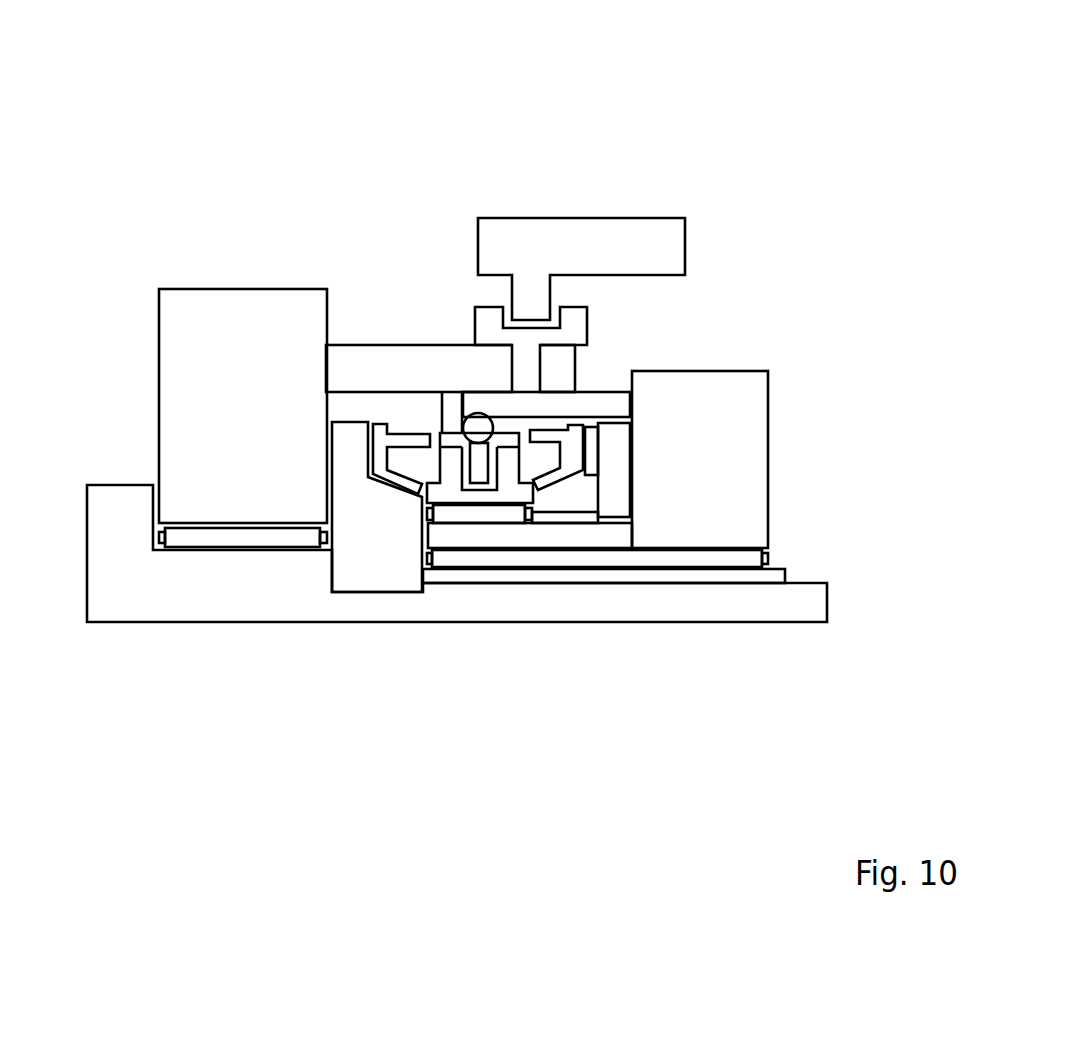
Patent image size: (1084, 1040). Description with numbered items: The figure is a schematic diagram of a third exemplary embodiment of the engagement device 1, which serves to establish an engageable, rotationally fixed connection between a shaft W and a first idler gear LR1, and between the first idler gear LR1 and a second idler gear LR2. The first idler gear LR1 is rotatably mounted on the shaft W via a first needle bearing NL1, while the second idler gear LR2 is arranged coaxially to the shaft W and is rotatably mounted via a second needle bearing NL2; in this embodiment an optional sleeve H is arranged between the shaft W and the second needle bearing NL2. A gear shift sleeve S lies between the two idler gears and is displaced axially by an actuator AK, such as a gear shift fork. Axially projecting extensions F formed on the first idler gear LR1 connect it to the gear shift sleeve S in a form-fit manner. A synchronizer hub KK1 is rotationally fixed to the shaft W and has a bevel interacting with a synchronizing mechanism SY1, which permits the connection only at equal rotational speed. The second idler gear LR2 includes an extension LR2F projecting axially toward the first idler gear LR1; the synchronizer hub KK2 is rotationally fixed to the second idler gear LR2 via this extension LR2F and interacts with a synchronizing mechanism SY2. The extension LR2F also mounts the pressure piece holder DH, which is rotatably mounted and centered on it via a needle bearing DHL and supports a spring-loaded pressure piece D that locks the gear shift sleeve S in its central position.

The engagement device 1 is at (118, 141).
The first idler gear LR1 is at (247, 325).
The synchronizing mechanism SY1 is at (389, 408).
The extensions F is at (432, 365).
The gear shift sleeve S is at (483, 327).
The actuator AK is at (580, 243).
The pressure piece D is at (480, 425).
The second idler gear LR2 is at (690, 390).
The synchronizer hub KK2 is at (613, 457).
The second needle bearing NL2 is at (680, 555).
The sleeve H is at (775, 578).
The first needle bearing NL1 is at (273, 537).
The synchronizer hub KK1 is at (373, 573).
The needle bearing DHL is at (458, 513).
The pressure piece holder DH is at (505, 483).
The extension LR2F is at (540, 537).
The synchronizing mechanism SY2 is at (580, 497).
The shaft W is at (737, 605).